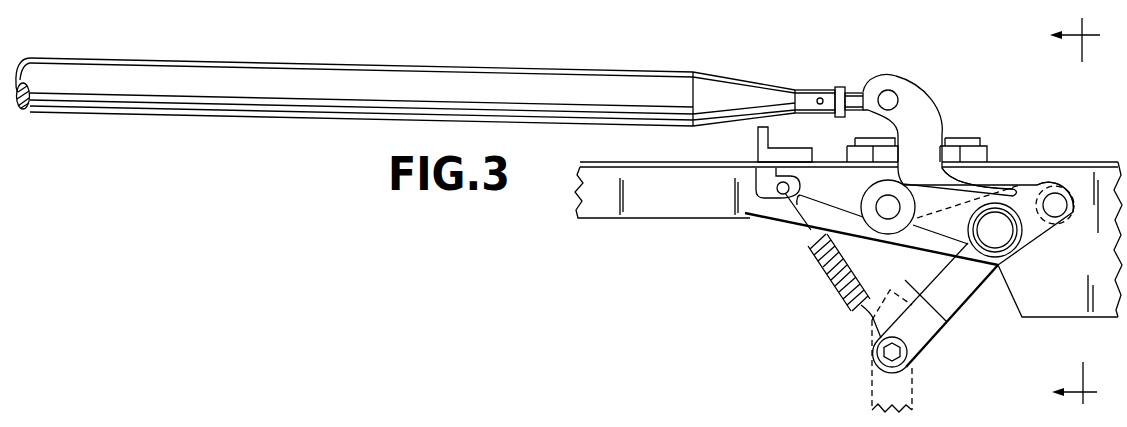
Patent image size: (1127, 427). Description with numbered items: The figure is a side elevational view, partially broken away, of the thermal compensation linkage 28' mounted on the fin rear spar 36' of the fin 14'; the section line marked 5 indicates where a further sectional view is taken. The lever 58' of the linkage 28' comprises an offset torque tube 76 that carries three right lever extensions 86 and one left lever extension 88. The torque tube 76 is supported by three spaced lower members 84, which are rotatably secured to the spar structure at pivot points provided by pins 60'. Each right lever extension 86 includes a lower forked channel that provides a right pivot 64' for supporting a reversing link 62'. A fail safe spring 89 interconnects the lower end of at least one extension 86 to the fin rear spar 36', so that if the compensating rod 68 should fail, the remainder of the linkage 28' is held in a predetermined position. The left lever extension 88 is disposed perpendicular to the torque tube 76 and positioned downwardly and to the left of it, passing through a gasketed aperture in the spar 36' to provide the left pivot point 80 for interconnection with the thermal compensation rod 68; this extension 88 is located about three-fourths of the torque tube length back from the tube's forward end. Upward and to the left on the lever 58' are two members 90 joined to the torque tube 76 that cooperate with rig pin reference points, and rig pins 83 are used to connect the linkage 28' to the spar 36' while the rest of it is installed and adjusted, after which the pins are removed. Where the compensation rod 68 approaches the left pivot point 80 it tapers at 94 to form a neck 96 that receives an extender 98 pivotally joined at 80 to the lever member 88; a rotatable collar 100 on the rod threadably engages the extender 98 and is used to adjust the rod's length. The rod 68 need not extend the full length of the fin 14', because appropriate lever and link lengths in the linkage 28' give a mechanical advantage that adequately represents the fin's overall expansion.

The thermal compensation rod 68 is at (292, 62).
The taper 94 is at (737, 93).
The neck 96 is at (808, 90).
The rotatable collar 100 is at (842, 88).
The extender 98 is at (856, 92).
The left pivot point 80 is at (900, 100).
The left lever extension 88 is at (915, 103).
The fail safe spring 89 is at (826, 278).
The lever 58' is at (988, 150).
The fin rear spar 36' is at (838, 147).
The fin 14' is at (848, 239).
The thermal compensation linkage 28' is at (895, 246).
The pins 60' is at (870, 205).
The lower members 84 is at (928, 228).
The offset torque tube 76 is at (955, 242).
The rig pins 83 is at (1073, 223).
The right lever extension 86 is at (957, 292).
The right pivot 64' is at (863, 352).
The reversing link 62' is at (918, 351).
The members 90 is at (1037, 180).
The section line 5- 5 is at (1081, 212).